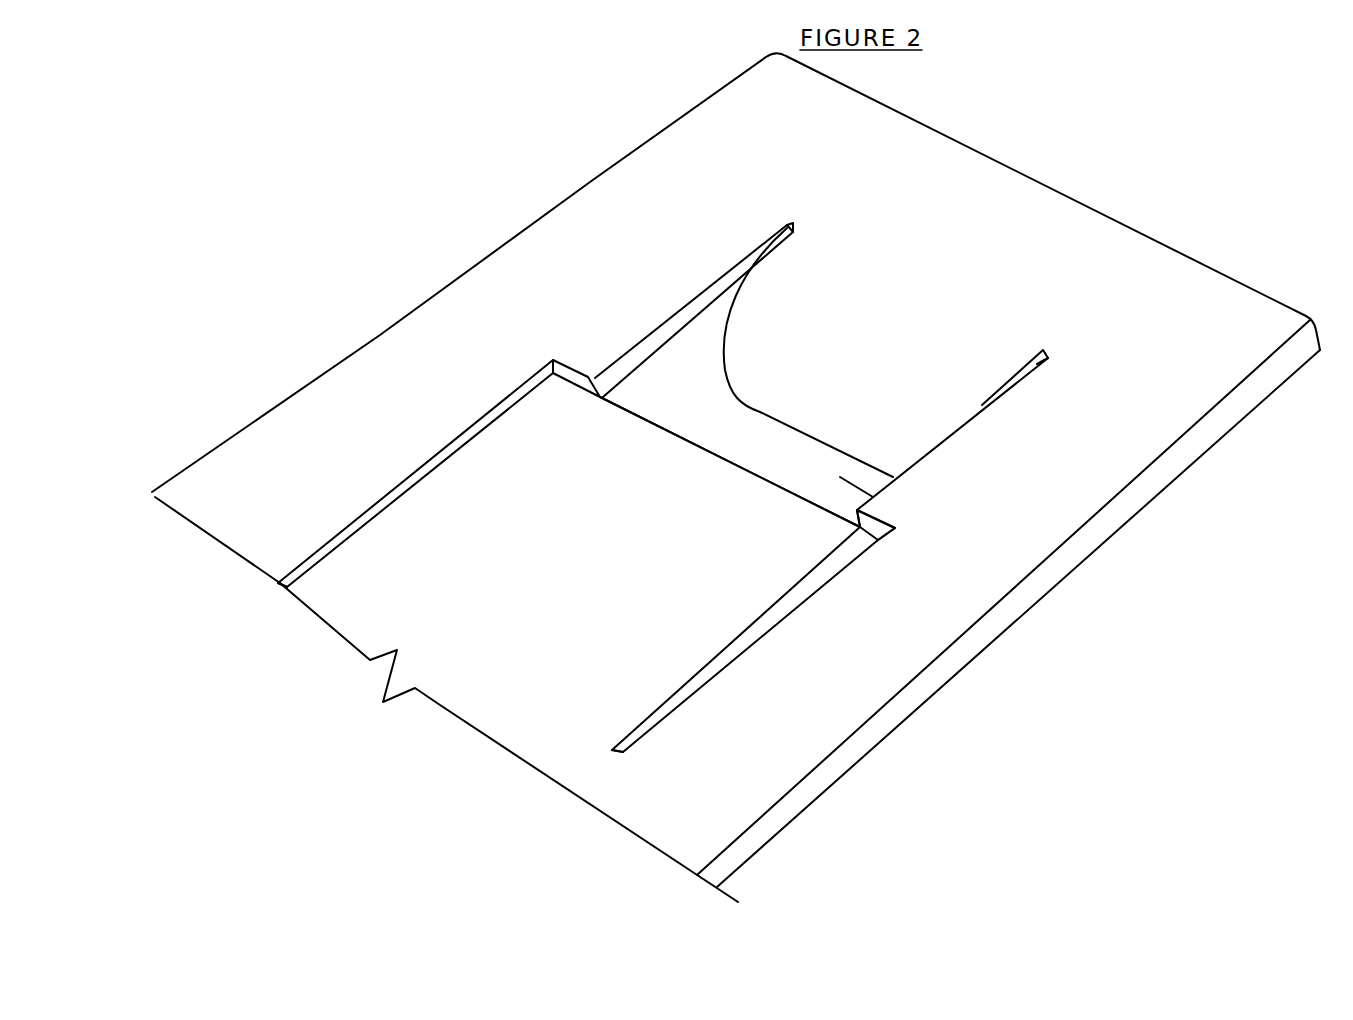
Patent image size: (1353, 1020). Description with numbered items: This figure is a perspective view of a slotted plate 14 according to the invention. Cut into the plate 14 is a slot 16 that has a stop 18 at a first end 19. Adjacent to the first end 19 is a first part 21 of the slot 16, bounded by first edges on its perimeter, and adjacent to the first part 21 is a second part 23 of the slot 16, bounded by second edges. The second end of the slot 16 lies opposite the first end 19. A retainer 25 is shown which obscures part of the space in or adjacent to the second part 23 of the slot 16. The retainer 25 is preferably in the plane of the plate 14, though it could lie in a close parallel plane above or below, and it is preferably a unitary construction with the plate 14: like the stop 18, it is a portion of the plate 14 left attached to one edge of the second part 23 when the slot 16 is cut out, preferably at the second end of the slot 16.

The plate 14 is at (1020, 553).
The slot 16 is at (860, 503).
The stop 18 is at (950, 380).
The first end 19 is at (808, 352).
The first part 21 is at (803, 450).
The second part 23 is at (760, 567).
The retainer 25 is at (612, 625).